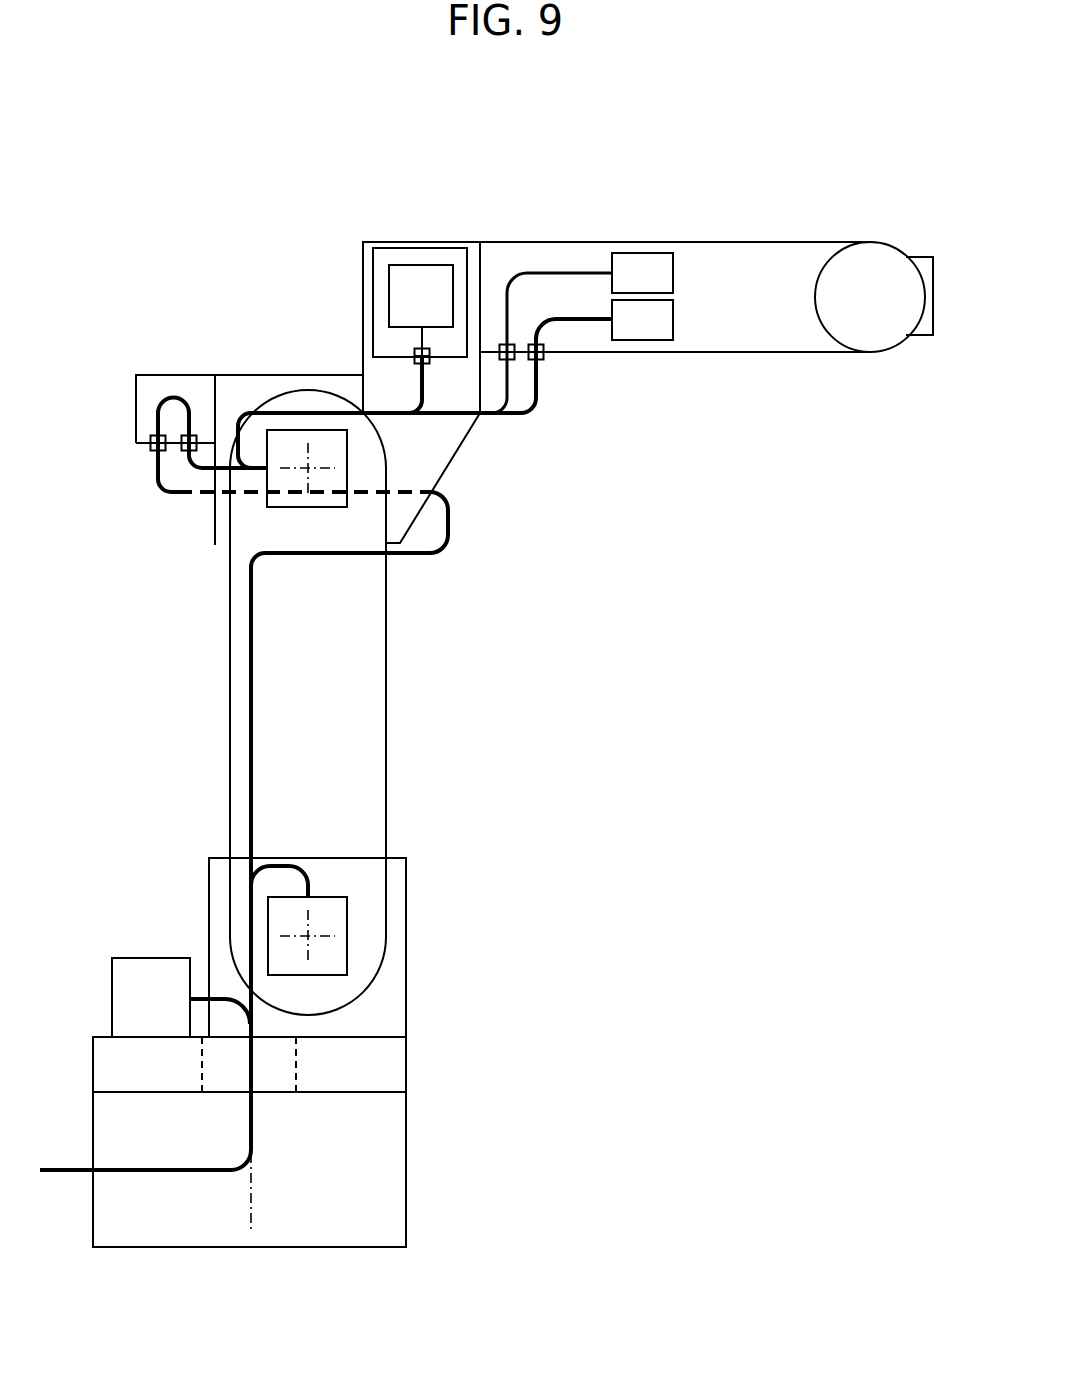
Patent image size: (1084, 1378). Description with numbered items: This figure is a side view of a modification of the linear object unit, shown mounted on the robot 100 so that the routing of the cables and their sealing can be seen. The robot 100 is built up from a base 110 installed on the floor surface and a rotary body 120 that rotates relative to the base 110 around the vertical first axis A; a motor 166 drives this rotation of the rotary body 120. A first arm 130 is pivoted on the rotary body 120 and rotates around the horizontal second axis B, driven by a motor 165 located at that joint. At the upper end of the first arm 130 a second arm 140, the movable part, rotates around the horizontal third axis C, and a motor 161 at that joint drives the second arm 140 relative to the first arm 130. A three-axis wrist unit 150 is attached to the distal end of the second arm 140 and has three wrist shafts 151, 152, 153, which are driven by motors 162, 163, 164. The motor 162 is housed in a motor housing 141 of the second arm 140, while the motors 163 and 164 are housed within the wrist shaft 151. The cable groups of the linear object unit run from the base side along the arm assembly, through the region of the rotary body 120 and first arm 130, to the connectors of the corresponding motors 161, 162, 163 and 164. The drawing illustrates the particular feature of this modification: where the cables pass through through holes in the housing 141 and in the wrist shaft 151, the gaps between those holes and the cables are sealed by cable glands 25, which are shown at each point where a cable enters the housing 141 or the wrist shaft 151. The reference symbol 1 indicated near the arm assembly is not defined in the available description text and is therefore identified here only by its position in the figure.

The robot 100 is at (110, 218).
The robot arm 1 is at (108, 370).
The base 110 is at (418, 1172).
The rotary body 120 is at (418, 975).
The first arm 130 is at (398, 697).
The second arm 140 is at (401, 225).
The motor housing 141 is at (447, 247).
The wrist unit 150 is at (920, 238).
The wrist shaft 151 is at (741, 241).
The wrist shaft 152 is at (822, 330).
The wrist shaft 153 is at (935, 320).
The motor 161 is at (347, 456).
The motor 162 is at (389, 291).
The motor 163 is at (636, 252).
The motor 164 is at (647, 342).
The motor 165 is at (347, 920).
The motor 166 is at (148, 957).
The cable gland 25 is at (413, 350).
The first axis A is at (252, 1200).
The second axis B is at (309, 935).
The third axis C is at (309, 470).